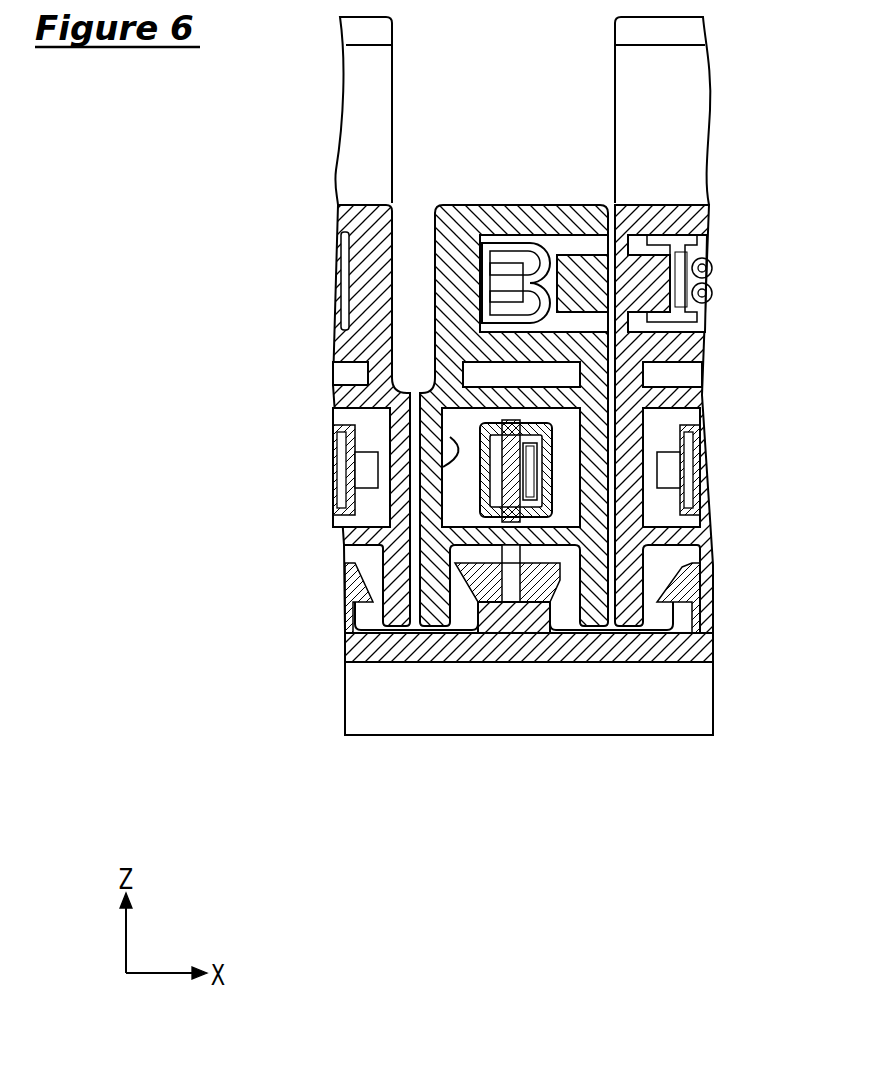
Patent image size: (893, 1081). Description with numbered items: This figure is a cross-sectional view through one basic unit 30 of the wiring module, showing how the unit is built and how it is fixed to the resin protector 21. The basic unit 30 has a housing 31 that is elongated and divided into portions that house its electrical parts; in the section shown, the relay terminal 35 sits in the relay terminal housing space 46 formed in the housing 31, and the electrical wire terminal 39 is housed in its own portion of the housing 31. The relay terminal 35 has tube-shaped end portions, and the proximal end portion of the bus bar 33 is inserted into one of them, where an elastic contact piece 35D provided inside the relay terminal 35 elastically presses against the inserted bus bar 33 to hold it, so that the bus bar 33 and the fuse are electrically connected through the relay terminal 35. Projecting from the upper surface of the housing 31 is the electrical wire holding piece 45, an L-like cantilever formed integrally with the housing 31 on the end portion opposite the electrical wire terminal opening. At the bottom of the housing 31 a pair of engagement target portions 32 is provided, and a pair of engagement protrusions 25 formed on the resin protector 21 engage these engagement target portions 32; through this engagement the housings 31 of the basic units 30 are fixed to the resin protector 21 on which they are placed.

The resin protector 21 is at (615, 653).
The engagement protrusions 25 is at (538, 617).
The basic unit 30 is at (552, 195).
The housing 31 is at (453, 222).
The engagement target portions 32 is at (570, 620).
The bus bar 33 is at (512, 470).
The relay terminal 35 is at (552, 448).
The elastic contact piece 35D is at (525, 487).
The electrical wire terminal 39 is at (503, 258).
The electrical wire holding piece 45 is at (692, 89).
The relay terminal housing space 46 is at (450, 437).